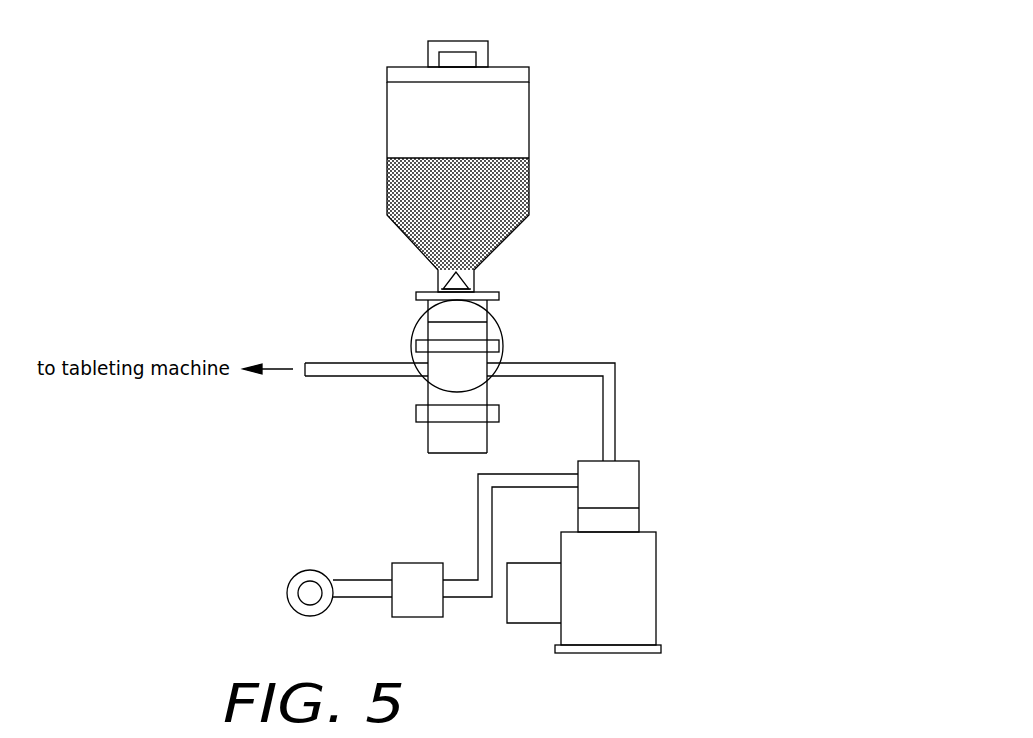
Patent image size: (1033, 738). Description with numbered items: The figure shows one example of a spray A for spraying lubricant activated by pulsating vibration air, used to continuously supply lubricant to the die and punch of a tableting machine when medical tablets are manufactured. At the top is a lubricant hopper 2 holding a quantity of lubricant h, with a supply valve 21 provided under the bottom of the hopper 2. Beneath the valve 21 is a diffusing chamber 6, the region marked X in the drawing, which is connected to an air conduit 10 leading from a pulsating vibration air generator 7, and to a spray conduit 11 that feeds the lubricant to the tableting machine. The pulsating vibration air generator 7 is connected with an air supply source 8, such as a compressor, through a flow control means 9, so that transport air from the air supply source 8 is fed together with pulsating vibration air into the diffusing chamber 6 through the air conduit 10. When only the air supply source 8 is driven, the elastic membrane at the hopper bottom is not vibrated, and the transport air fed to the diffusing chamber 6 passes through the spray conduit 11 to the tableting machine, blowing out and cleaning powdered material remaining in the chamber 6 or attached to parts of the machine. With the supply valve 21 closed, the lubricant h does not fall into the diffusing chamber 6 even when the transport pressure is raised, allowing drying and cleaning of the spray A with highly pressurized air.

The spray A is at (580, 66).
The lubricant hopper 2 is at (513, 183).
The lubricant h is at (427, 157).
The supply valve 21 is at (474, 278).
The powder feeder portion X is at (507, 327).
The diffusing chamber 6 is at (487, 433).
The spray conduit 11 is at (338, 376).
The air conduit 10 is at (615, 413).
The pulsating vibration air generator 7 is at (656, 578).
The flow control means 9 is at (422, 563).
The air supply source 8 is at (310, 597).